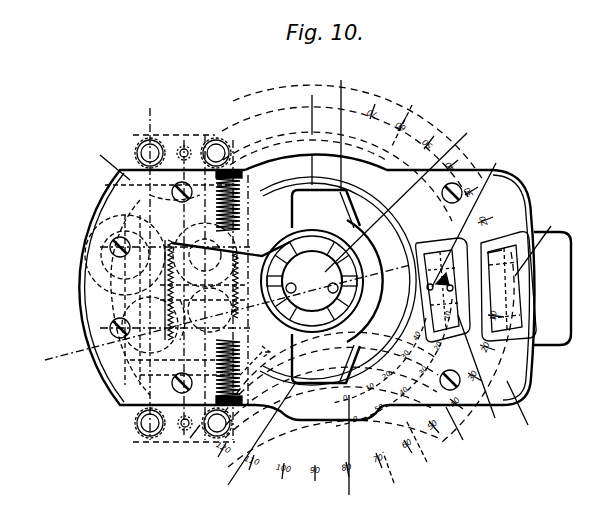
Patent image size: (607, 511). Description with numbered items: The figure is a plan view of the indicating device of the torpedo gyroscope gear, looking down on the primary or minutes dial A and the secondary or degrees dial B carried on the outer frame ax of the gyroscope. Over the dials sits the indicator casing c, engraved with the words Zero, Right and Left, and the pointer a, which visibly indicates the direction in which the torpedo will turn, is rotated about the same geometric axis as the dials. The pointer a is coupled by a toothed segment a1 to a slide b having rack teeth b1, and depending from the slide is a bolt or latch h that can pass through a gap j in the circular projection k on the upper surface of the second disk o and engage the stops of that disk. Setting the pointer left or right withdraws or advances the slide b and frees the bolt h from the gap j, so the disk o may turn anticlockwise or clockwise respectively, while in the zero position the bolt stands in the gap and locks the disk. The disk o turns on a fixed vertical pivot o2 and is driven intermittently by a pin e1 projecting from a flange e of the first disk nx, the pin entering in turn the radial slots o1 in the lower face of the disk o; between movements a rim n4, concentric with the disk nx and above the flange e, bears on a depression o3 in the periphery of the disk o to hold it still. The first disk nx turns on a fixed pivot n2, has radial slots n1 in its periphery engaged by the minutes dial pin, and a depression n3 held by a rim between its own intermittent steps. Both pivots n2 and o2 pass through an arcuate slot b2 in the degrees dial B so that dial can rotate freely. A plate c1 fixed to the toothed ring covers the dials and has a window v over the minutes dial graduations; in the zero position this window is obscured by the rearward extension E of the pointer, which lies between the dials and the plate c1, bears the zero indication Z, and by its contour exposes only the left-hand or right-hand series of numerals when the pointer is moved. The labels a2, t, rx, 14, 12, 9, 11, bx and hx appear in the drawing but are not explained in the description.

The pointer a is at (538, 357).
The toothed segment a1 is at (378, 195).
The rotor arm a2 is at (304, 220).
The lever t is at (231, 233).
The pin rx is at (255, 360).
The pointer 14 is at (245, 307).
The zero indication Z is at (508, 286).
The rearward extension E is at (501, 247).
The nut 12 is at (151, 477).
The nut 9 is at (215, 263).
The outer frame ax is at (187, 436).
The axis 11 is at (312, 95).
The rack teeth b1 is at (347, 288).
The slot b2 is at (403, 295).
The minutes dial A is at (458, 431).
The degrees dial B is at (420, 449).
The window v is at (481, 375).
The plate c1 is at (524, 412).
The indicator casing c is at (193, 319).
The flange e is at (178, 395).
The circular projection k is at (100, 246).
The bolt or latch h is at (140, 300).
The gap j is at (150, 285).
The fixed vertical pivot n2 is at (130, 325).
The slide b is at (160, 330).
The radial slots n1 is at (175, 350).
The second disk o is at (130, 205).
The radial slots o1 is at (135, 220).
The second fixed vertical pivot o2 is at (125, 232).
The depression o3 is at (125, 262).
The rod bx is at (130, 185).
The arm hx is at (140, 197).
The pin e1 is at (175, 310).
The disk nx is at (160, 300).
The depression n3 is at (175, 375).
The rim n4 is at (185, 392).